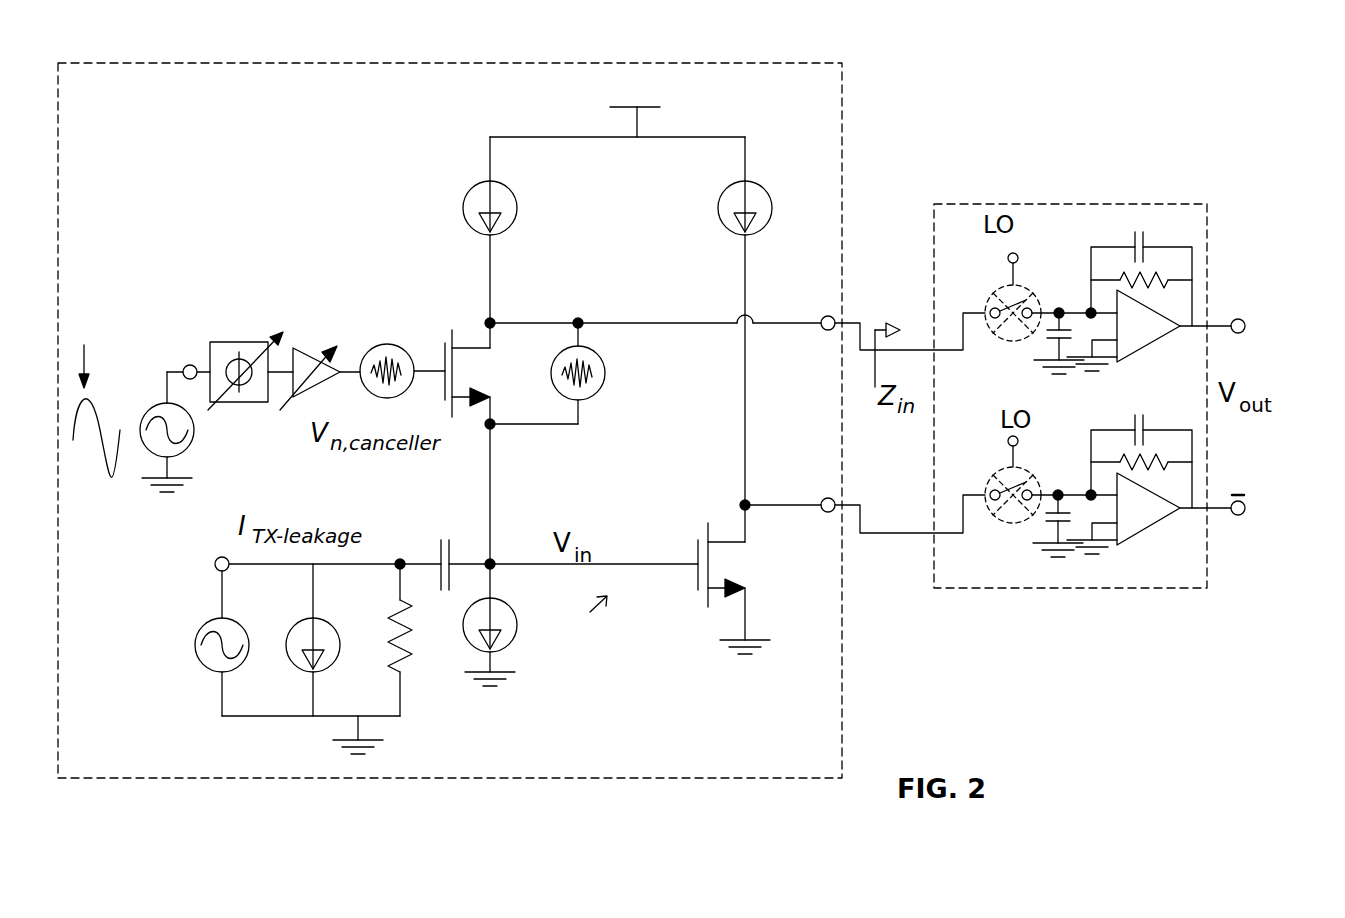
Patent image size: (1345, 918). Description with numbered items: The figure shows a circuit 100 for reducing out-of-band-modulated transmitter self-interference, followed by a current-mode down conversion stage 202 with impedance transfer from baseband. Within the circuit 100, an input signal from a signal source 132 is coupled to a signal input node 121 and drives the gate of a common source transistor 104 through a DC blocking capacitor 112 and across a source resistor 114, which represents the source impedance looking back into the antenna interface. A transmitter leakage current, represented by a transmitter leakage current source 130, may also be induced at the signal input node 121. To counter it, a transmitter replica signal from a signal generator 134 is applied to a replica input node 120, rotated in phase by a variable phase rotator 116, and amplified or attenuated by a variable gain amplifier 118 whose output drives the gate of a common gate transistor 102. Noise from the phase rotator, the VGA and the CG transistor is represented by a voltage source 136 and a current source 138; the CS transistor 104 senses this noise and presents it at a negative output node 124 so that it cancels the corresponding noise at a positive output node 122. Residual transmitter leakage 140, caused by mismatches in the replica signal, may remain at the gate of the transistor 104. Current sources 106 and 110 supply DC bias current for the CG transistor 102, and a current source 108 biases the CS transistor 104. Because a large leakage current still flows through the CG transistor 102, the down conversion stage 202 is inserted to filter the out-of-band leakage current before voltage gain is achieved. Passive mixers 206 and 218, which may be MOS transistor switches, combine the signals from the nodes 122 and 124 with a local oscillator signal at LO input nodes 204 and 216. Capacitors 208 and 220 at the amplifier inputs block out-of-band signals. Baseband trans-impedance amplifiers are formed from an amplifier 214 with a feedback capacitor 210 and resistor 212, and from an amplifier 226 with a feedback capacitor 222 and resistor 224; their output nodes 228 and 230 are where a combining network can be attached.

The circuit 100 is at (155, 110).
The common gate transistor 102 is at (457, 378).
The common source transistor 104 is at (697, 546).
The current source 106 is at (465, 200).
The current source 108 is at (718, 205).
The current source 110 is at (517, 580).
The DC blocking capacitor 112 is at (440, 538).
The resistor 114 is at (408, 667).
The variable phase rotator 116 is at (242, 342).
The variable gain amplifier 118 is at (302, 345).
The replica input node 120 is at (192, 380).
The signal input node 121 is at (216, 560).
The positive output node 122 is at (823, 316).
The negative output node 124 is at (823, 512).
The transmitter leakage current source 130 is at (302, 620).
The signal source 132 is at (207, 620).
The signal generator 134 is at (160, 405).
The voltage source 136 is at (385, 343).
The current source 138 is at (603, 363).
The residual transmitter leakage signal 140 is at (645, 577).
The current-mode down conversion stage 202 is at (1020, 204).
The LO input node 204 is at (1007, 258).
The passive mixer 206 is at (1028, 286).
The capacitor 208 is at (1050, 344).
The capacitor 210 is at (1133, 240).
The resistor 212 is at (1165, 278).
The amplifier 214 is at (1150, 348).
The LO input node 216 is at (1007, 441).
The passive mixer 218 is at (990, 515).
The capacitor 220 is at (1048, 528).
The capacitor 222 is at (1097, 346).
The resistor 224 is at (1165, 460).
The amplifier 226 is at (1150, 530).
The output node 228 is at (1245, 324).
The output node 230 is at (1245, 506).